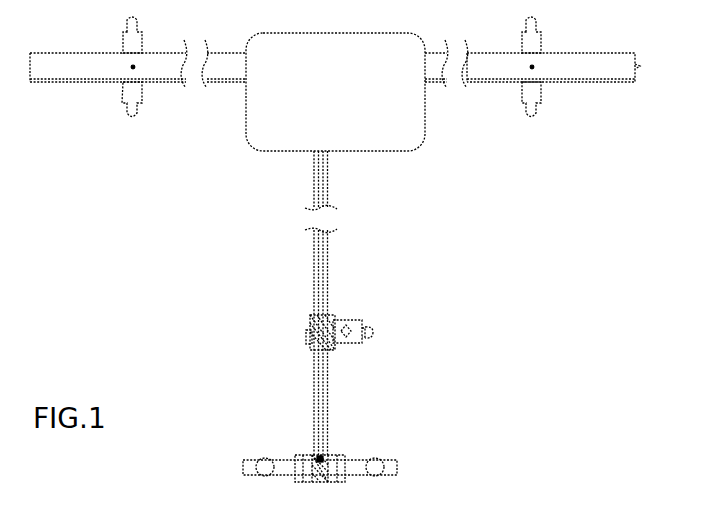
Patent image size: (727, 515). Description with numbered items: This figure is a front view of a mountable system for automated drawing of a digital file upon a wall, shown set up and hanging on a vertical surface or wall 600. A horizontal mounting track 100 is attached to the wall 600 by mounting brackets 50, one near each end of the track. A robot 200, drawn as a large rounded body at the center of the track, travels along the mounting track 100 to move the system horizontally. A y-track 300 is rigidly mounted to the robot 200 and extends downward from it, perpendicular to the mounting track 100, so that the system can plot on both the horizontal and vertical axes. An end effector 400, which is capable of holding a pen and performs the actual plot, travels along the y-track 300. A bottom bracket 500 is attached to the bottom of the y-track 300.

The mounting brackets 50 is at (121, 49).
The mounting track 100 is at (72, 68).
The robot 200 is at (246, 120).
The y-track 300 is at (330, 258).
The end effector 400 is at (370, 322).
The bottom bracket 500 is at (397, 465).
The wall 600 is at (681, 472).